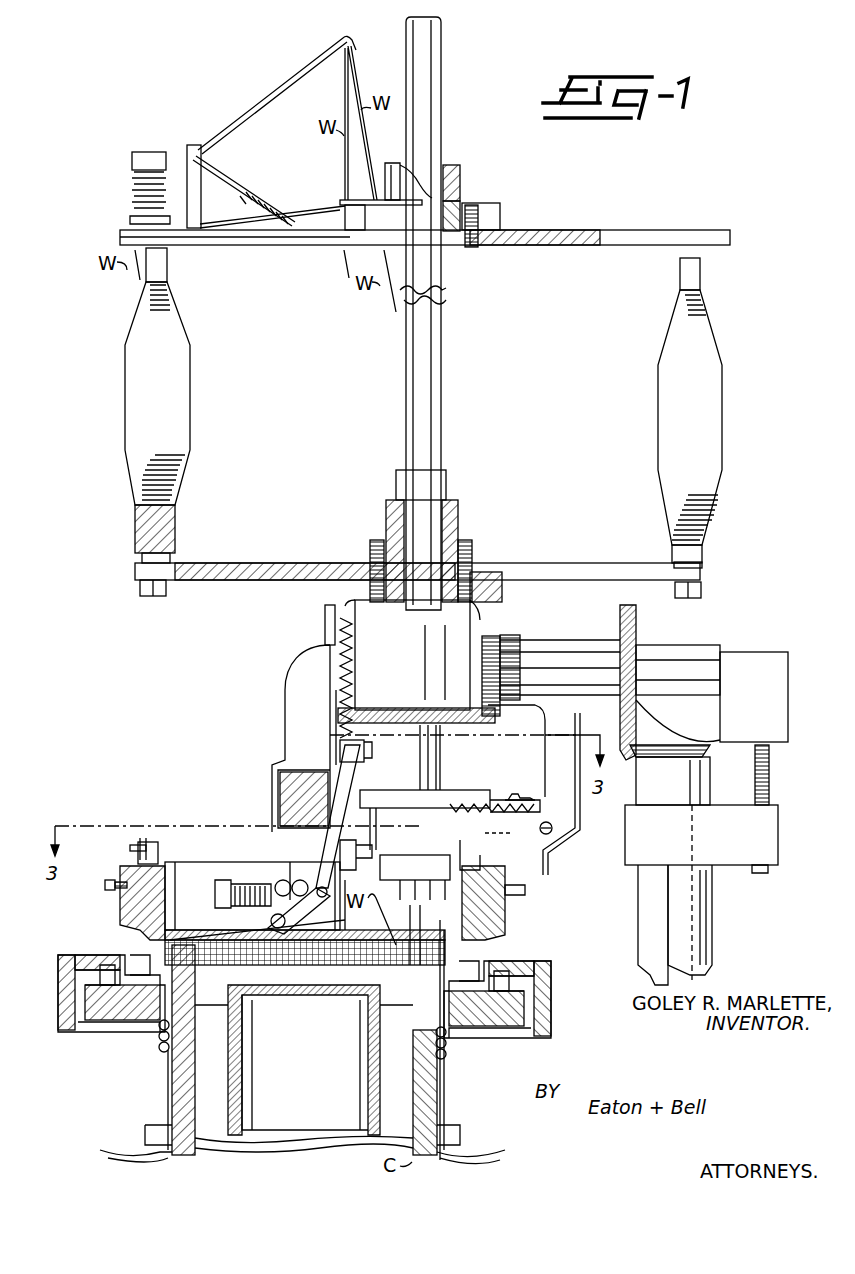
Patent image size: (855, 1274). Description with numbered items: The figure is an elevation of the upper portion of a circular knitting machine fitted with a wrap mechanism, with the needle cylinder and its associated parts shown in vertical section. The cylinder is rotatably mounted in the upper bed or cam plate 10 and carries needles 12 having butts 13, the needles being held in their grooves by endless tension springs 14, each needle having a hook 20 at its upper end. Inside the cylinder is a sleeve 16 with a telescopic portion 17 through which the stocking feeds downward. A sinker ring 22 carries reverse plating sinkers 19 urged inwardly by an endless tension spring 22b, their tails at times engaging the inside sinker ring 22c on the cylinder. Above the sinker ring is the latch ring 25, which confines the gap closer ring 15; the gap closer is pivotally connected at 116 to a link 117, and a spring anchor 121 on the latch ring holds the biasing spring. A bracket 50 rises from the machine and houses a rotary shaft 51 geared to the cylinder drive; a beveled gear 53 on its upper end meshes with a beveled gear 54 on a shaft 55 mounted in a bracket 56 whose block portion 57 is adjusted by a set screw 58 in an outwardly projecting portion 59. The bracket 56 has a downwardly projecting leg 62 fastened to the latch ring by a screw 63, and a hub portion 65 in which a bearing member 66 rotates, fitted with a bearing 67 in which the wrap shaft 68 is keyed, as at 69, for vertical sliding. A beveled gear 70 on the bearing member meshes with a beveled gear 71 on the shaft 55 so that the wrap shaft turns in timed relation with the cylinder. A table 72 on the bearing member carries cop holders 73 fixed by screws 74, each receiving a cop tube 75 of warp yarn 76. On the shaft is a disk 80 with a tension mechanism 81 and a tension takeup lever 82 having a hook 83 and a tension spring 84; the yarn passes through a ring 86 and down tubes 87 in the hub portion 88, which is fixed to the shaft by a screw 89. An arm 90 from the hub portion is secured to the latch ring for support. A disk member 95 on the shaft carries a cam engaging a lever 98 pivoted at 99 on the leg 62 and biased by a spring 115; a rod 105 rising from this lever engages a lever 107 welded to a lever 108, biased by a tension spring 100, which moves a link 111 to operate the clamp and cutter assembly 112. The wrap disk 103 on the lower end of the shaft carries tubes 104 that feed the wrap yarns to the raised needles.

The upper bed or cam plate 10 is at (116, 1146).
The needles 12 is at (170, 1078).
The butts 13 is at (144, 1124).
The endless tension springs 14 is at (158, 1036).
The gap closer ring 15 is at (132, 853).
The sleeve 16 is at (230, 1142).
The telescopic portion 17 is at (359, 1020).
The reverse plating sinkers 19 is at (108, 952).
The hook 20 is at (443, 912).
The sinker ring 22 is at (58, 1006).
The endless tension spring 22b is at (136, 962).
The inside sinker ring 22c is at (306, 1018).
The latch ring 25 is at (124, 906).
The bracket 50 is at (712, 900).
The rotary shaft 51 is at (654, 910).
The beveled gear 53 is at (708, 784).
The beveled gear 54 is at (636, 616).
The shaft 55 is at (690, 663).
The bracket 56 is at (554, 640).
The block portion 57 is at (780, 717).
The set screw 58 is at (768, 784).
The outwardly projecting portion 59 is at (774, 824).
The downwardly projecting leg 62 is at (547, 755).
The screw 63 is at (528, 893).
The hub portion 65 is at (412, 655).
The bearing member or portion 66 is at (502, 586).
The bearing 67 is at (382, 508).
The wrap shaft 68 is at (440, 30).
The keyed arrangement 69 is at (396, 473).
The beveled gear 70 is at (414, 709).
The beveled gear 71 is at (490, 676).
The table 72 is at (528, 562).
The cop holders 73 is at (170, 546).
The screws 74 is at (152, 594).
The cop tube 75 is at (136, 550).
The warp yarn 76 is at (183, 341).
The disk 80 is at (290, 236).
The tension mechanism 81 is at (122, 200).
The tension takeup lever 82 is at (274, 94).
The hook 83 is at (349, 40).
The tension spring 84 is at (266, 204).
The ring 86 is at (356, 198).
The tubes 87 is at (472, 250).
The hub portion 88 is at (390, 164).
The screw 89 is at (460, 187).
The downwardly projecting arm 90 is at (284, 708).
The disk member 95 is at (380, 784).
The lever 98 is at (532, 806).
The pivot 99 is at (511, 796).
The tension spring 100 is at (340, 672).
The wrap disk 103 is at (462, 842).
The tubes 104 is at (384, 888).
The rod 105 is at (442, 770).
The lever 107 is at (325, 620).
The lever 108 is at (335, 746).
The link 111 is at (324, 852).
The clamp and cutter assembly 112 is at (316, 876).
The spring 115 is at (539, 826).
The pivot 116 is at (144, 838).
The link 117 is at (160, 844).
The spring anchor 121 is at (104, 884).